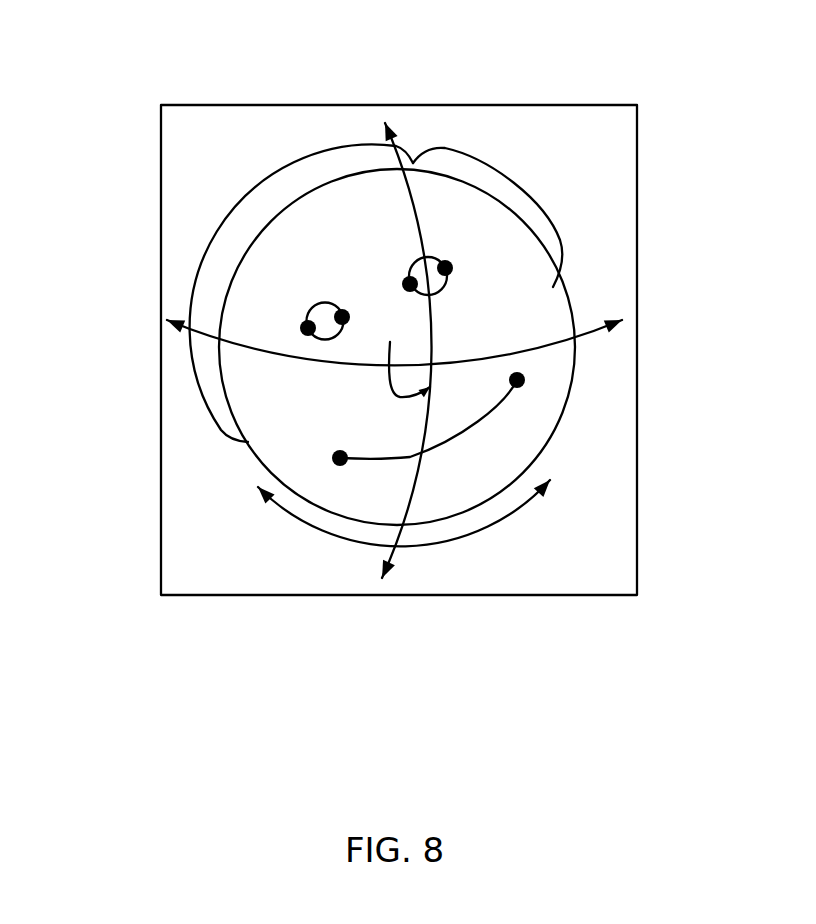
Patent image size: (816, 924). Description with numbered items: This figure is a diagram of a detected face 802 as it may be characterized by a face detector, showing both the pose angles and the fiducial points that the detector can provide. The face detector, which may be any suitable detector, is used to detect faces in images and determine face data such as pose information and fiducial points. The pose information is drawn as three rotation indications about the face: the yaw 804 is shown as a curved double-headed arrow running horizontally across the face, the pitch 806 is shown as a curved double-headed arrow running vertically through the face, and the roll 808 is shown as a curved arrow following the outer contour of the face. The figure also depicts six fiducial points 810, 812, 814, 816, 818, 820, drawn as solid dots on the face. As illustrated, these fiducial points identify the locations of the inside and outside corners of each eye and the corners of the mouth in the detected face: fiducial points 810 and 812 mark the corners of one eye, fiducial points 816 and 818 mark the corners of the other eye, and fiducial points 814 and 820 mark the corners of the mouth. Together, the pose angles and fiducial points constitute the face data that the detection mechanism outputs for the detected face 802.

The tracking body / object 802 is at (302, 143).
The yaw 804 is at (237, 340).
The pitch 806 is at (436, 312).
The roll 808 is at (492, 522).
The fiducial point 810 is at (447, 268).
The fiducial point 812 is at (410, 284).
The fiducial point 814 is at (517, 380).
The fiducial point 816 is at (308, 328).
The fiducial point 818 is at (342, 317).
The fiducial point 820 is at (340, 458).